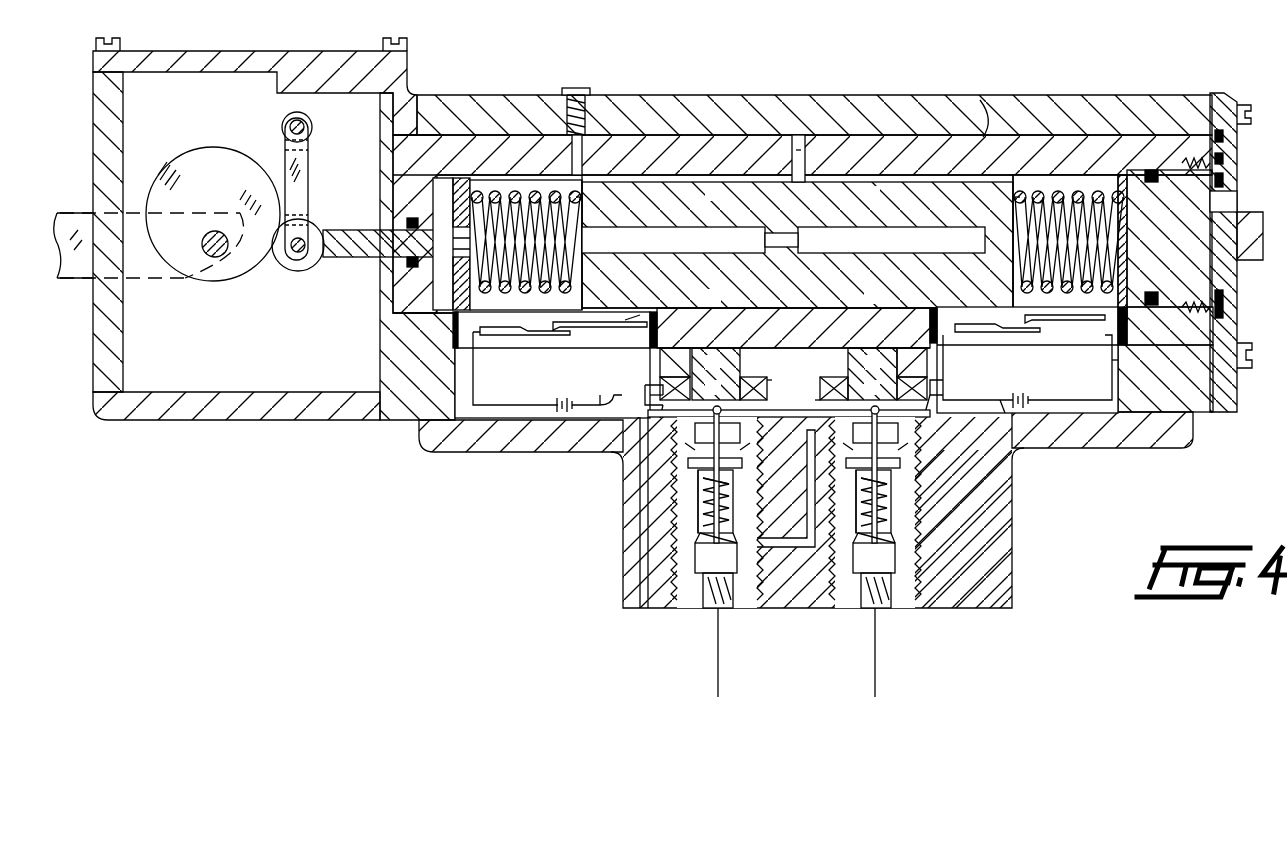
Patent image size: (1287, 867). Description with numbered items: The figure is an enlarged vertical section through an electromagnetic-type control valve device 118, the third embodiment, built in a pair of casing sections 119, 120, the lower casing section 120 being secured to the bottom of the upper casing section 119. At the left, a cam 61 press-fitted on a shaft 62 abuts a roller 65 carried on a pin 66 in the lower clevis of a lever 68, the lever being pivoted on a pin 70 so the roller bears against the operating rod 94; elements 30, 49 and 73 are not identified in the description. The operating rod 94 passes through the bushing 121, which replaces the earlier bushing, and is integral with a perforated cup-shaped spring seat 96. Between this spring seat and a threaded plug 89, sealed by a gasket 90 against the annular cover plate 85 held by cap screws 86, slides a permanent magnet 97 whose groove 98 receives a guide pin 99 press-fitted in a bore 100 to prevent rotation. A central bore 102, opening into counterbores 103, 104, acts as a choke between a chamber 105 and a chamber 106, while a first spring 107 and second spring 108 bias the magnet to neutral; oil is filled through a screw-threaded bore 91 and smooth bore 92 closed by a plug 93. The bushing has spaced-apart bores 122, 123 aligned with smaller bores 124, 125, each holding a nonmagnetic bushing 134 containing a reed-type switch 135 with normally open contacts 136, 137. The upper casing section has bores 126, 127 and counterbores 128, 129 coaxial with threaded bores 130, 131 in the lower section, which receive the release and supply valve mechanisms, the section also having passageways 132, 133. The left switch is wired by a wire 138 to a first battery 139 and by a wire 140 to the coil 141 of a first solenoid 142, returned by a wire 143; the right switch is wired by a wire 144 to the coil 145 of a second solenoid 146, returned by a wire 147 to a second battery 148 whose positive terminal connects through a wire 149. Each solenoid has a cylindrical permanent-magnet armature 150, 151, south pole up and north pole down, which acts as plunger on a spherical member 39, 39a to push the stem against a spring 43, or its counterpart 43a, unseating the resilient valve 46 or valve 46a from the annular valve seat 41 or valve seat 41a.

The outlet conduit 30 is at (880, 612).
The spherical member 39 is at (900, 430).
The spherical member 39a is at (680, 440).
The annular valve seat 41 is at (890, 522).
The valve seat 41a is at (700, 524).
The spring 43 is at (895, 500).
The valve sleeve 43a is at (700, 502).
The flat annular resilient valve 46 is at (890, 540).
The valve 46a is at (700, 540).
The outlet conduit 49 is at (725, 612).
The cam 61 is at (205, 160).
The shaft 62 is at (216, 257).
The roller 65 is at (282, 258).
The pin 66 is at (300, 253).
The lever 68 is at (308, 178).
The pin 70 is at (290, 127).
The drive shaft 73 is at (95, 212).
The annular cover plate 85 is at (1226, 140).
The cap screws 86 is at (1251, 112).
The plug 89 is at (1230, 200).
The gasket 90 is at (1222, 165).
The screw-threaded bore 91 is at (586, 112).
The smooth bore 92 is at (585, 158).
The screw-threaded plug 93 is at (573, 88).
The operating rod 94 is at (348, 244).
The perforated cup-shaped spring seat 96 is at (462, 185).
The permanent magnet 97 is at (835, 185).
The groove 98 is at (672, 176).
The guide pin 99 is at (805, 160).
The bore 100 is at (792, 150).
The central bore 102 is at (790, 240).
The counterbore 103 is at (684, 227).
The counterbore 104 is at (942, 228).
The chamber 105 is at (545, 186).
The chamber 106 is at (1065, 180).
The first spring 107 is at (590, 198).
The second spring 108 is at (1013, 197).
The electromagnetic-type control valve device 118 is at (726, 80).
The casing section 119 is at (922, 108).
The casing section 120 is at (1008, 544).
The bushing 121 is at (983, 137).
The bore 122 is at (458, 345).
The bore 123 is at (1127, 322).
The bore 124 is at (470, 440).
The bore 125 is at (1118, 372).
The bore 126 is at (740, 360).
The bore 127 is at (848, 360).
The counterbore 128 is at (770, 380).
The counterbore 129 is at (818, 400).
The bore 130 is at (640, 448).
The bore 131 is at (808, 425).
The passageway 132 is at (812, 484).
The passageway 133 is at (640, 590).
The bushing 134 is at (667, 314).
The limit or reed-type switch 135 is at (595, 344).
The contact 136 is at (453, 329).
The contact 137 is at (625, 320).
The wire 138 is at (473, 364).
The first battery 139 is at (556, 400).
The wire 140 is at (645, 362).
The coil 141 is at (650, 395).
The first solenoid 142 is at (648, 410).
The wire 143 is at (600, 403).
The wire 144 is at (952, 360).
The coil 145 is at (950, 380).
The second solenoid 146 is at (930, 410).
The wire 147 is at (1000, 405).
The second battery 148 is at (1030, 396).
The wire 149 is at (1112, 360).
The armature 150 is at (697, 350).
The armature 151 is at (857, 352).